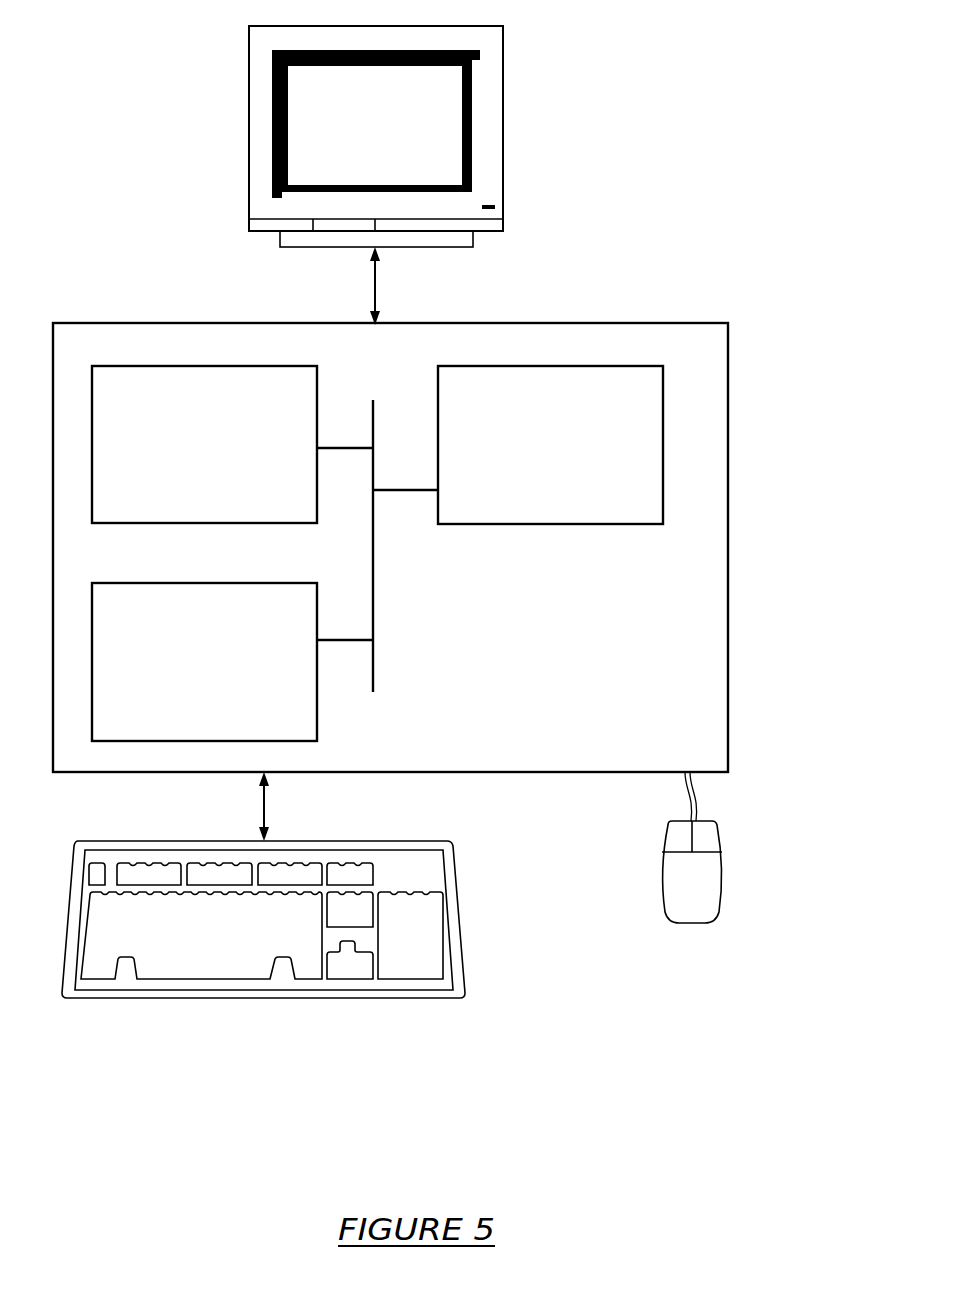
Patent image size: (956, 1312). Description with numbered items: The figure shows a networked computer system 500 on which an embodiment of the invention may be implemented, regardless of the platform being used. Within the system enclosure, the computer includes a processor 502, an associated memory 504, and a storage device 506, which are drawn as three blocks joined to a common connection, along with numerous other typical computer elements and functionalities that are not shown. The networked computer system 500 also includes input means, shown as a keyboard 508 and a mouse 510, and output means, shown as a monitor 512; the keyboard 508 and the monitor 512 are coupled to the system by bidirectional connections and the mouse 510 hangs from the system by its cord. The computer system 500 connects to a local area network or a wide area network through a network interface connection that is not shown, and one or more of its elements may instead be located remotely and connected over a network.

The networked computer system 500 is at (747, 180).
The processor 502 is at (546, 457).
The memory 504 is at (183, 457).
The storage device 506 is at (179, 675).
The keyboard 508 is at (173, 958).
The mouse 510 is at (671, 894).
The monitor 512 is at (354, 141).